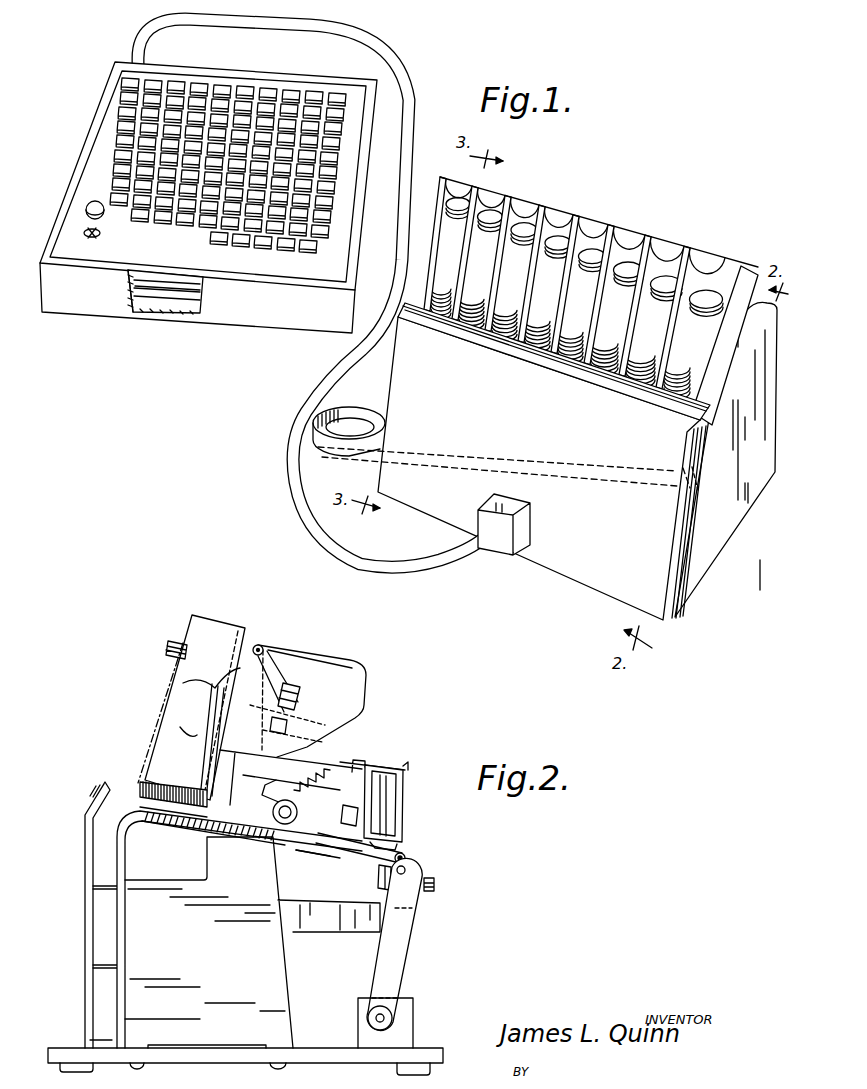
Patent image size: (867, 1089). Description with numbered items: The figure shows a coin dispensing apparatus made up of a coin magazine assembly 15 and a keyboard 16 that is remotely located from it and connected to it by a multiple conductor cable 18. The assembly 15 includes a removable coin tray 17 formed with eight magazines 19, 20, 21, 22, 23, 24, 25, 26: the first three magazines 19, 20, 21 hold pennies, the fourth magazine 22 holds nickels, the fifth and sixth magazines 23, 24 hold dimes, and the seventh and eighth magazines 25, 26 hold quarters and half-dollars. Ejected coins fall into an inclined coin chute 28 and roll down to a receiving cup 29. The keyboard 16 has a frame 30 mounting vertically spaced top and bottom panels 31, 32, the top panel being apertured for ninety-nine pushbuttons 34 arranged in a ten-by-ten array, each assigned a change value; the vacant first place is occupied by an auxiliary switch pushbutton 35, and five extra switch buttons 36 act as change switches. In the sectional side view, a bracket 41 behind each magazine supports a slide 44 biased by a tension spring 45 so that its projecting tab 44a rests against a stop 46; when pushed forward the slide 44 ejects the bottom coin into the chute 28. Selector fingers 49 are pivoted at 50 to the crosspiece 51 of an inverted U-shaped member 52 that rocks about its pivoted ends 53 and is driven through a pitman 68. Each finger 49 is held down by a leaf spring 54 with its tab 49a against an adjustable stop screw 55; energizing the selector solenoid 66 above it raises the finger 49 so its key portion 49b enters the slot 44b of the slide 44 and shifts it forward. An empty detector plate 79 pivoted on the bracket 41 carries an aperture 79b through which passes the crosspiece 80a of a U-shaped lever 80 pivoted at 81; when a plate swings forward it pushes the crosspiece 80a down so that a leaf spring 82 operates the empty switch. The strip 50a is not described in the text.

In FIG. 1, the coin magazine assembly 15 is at (577, 395).
In FIG. 2, the coin magazine assembly 15 is at (318, 756).
In FIG. 1, the keyboard 16 is at (208, 197).
In FIG. 1, the removable coin tray 17 is at (578, 301).
In FIG. 2, the removable coin tray 17 is at (195, 693).
In FIG. 1, the multiple conductor cable 18 is at (334, 293).
In FIG. 1, the magazine 19 is at (481, 239).
In FIG. 1, the magazine 20 is at (507, 250).
In FIG. 1, the magazine 21 is at (537, 260).
In FIG. 1, the magazine 22 is at (567, 270).
In FIG. 1, the magazine 23 is at (596, 279).
In FIG. 1, the magazine 24 is at (631, 294).
In FIG. 1, the magazine 25 is at (668, 305).
In FIG. 1, the magazine 26 is at (708, 315).
In FIG. 2, the magazine 26 is at (176, 721).
In FIG. 1, the inclined coin chute 28 is at (504, 486).
In FIG. 2, the inclined coin chute 28 is at (240, 928).
In FIG. 1, the receiving cup 29 is at (349, 416).
In FIG. 1, the frame 30 is at (171, 314).
In FIG. 1, the top panel 31 is at (129, 311).
In FIG. 1, the bottom panel 32 is at (167, 321).
In FIG. 1, the pushbuttons 34 is at (228, 147).
In FIG. 1, the auxiliary switch pushbutton 35 is at (69, 210).
In FIG. 1, the extra switch buttons 36 is at (263, 269).
In FIG. 2, the bracket 41 is at (372, 756).
In FIG. 2, the slide 44 is at (251, 844).
In FIG. 2, the projecting tab 44a is at (272, 784).
In FIG. 2, the slot 44b is at (307, 862).
In FIG. 2, the tension spring 45 is at (326, 764).
In FIG. 2, the stop 46 is at (303, 804).
In FIG. 2, the finger 49 is at (359, 854).
In FIG. 2, the downward projecting tab 49a is at (364, 885).
In FIG. 2, the key portion 49b is at (318, 871).
In FIG. 2, the pivotal connection 50 is at (422, 842).
In FIG. 2, the base strip 50a is at (133, 777).
In FIG. 2, the crosspiece 51 is at (434, 865).
In FIG. 2, the inverted U-shaped member 52 is at (416, 944).
In FIG. 2, the pivoted ends 53 is at (403, 1010).
In FIG. 2, the leaf spring 54 is at (340, 817).
In FIG. 2, the adjustable stop screw 55 is at (445, 894).
In FIG. 2, the selector solenoid 66 is at (409, 806).
In FIG. 2, the pitman 68 is at (252, 942).
In FIG. 2, the empty detector plate 79 is at (309, 695).
In FIG. 2, the aperture 79b is at (312, 669).
In FIG. 2, the U-shaped lever 80 is at (292, 667).
In FIG. 2, the crosspiece 80a is at (317, 698).
In FIG. 2, the pivot 81 is at (270, 632).
In FIG. 2, the leaf spring 82 is at (285, 732).